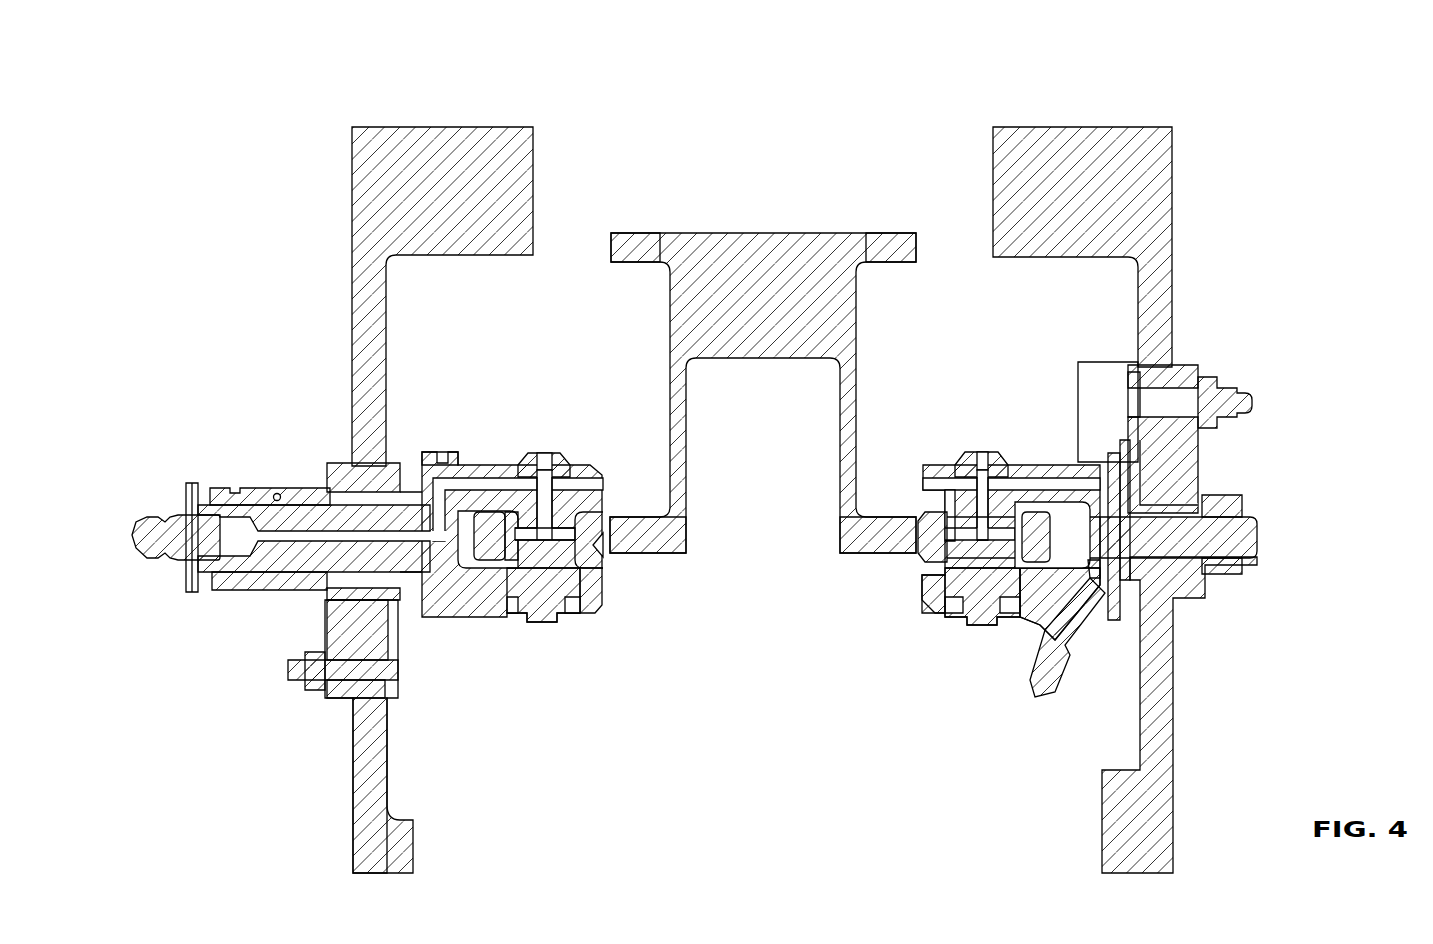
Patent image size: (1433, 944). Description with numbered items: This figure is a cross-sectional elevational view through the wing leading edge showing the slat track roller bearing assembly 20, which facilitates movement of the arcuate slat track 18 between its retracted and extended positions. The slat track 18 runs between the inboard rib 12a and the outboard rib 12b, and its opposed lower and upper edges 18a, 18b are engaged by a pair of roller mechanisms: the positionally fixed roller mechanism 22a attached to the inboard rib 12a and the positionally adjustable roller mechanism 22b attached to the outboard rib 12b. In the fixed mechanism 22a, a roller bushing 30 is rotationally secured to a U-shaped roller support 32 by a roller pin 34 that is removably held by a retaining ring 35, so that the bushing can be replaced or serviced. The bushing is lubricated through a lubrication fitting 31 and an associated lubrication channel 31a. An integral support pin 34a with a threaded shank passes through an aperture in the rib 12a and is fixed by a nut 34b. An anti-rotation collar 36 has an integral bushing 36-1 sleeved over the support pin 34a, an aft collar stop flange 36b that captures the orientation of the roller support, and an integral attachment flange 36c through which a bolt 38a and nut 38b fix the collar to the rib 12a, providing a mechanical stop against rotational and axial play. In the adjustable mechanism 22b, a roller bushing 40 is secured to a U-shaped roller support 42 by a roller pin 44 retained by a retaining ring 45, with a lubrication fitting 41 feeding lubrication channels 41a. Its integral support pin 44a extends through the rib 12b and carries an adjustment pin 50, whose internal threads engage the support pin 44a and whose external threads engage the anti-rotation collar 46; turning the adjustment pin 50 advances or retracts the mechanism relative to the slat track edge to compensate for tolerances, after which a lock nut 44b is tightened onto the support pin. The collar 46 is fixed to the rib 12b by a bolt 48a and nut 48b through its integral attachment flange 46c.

The inboard rib 12a is at (1120, 150).
The outboard rib 12b is at (405, 152).
The slat track 18 is at (790, 325).
The lower edge 18a is at (610, 240).
The upper edge 18b is at (935, 235).
The slat track roller bearing assembly 20 is at (693, 715).
The positionally fixed roller mechanism 22a is at (1025, 458).
The positionally adjustable roller mechanism 22b is at (540, 437).
The roller bushing 30 is at (905, 555).
The lubrication fitting 31 is at (1065, 675).
The lubrication channel 31a is at (1115, 575).
The U-shaped roller support 32 is at (1045, 612).
The roller pin 34 is at (960, 455).
The support pin 34a is at (1257, 535).
The nut 34b is at (1230, 498).
The retaining ring 35 is at (960, 630).
The anti-rotation collar 36 is at (1150, 455).
The integral bushing 36-1 is at (1165, 565).
The aft collar stop flange 36b is at (1105, 365).
The integral attachment flange 36c is at (1112, 440).
The bolt 38a is at (1175, 368).
The nut 38b is at (1216, 380).
The roller bushing 40 is at (600, 510).
The lubrication fitting 41 is at (160, 528).
The lubrication channel 41a is at (410, 540).
The U-shaped roller support 42 is at (470, 455).
The roller pin 44 is at (548, 455).
The support pin 44a is at (290, 557).
The lock nut 44b is at (200, 590).
The retaining ring 45 is at (530, 622).
The anti-rotation collar 46 is at (340, 475).
The integral attachment flange 46c is at (395, 620).
The bolt 48a is at (385, 662).
The nut 48b is at (310, 675).
The adjustment pin 50 is at (290, 487).